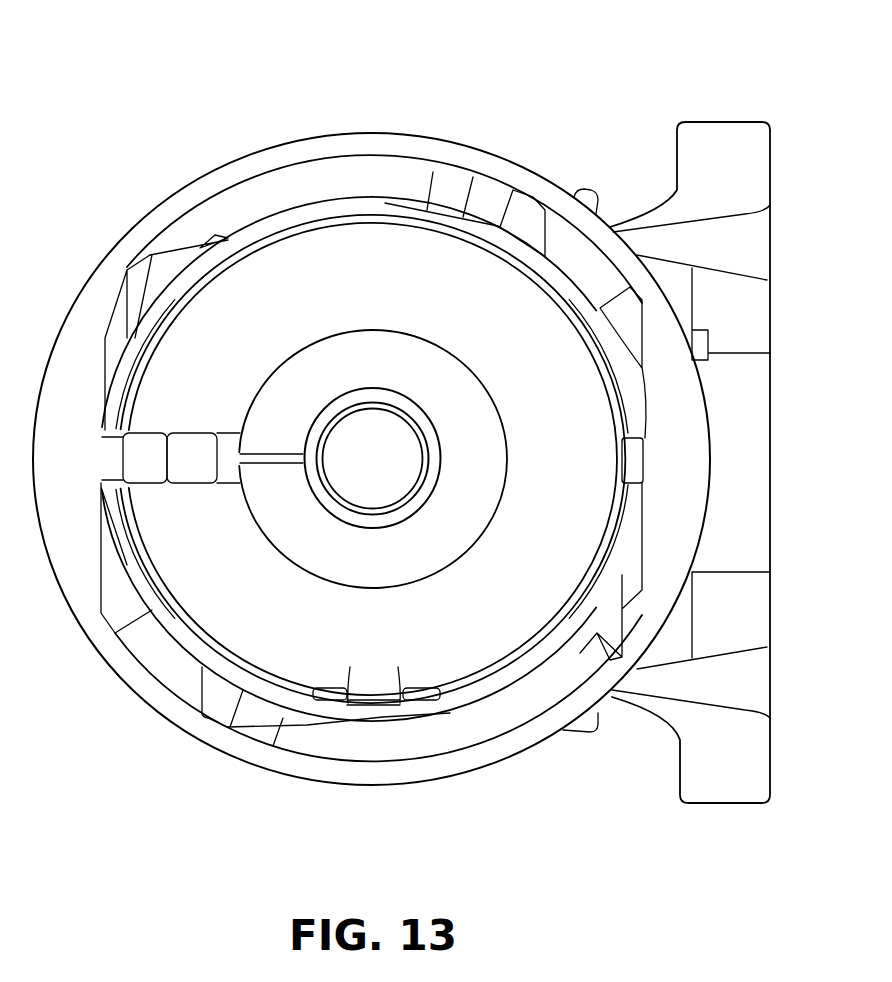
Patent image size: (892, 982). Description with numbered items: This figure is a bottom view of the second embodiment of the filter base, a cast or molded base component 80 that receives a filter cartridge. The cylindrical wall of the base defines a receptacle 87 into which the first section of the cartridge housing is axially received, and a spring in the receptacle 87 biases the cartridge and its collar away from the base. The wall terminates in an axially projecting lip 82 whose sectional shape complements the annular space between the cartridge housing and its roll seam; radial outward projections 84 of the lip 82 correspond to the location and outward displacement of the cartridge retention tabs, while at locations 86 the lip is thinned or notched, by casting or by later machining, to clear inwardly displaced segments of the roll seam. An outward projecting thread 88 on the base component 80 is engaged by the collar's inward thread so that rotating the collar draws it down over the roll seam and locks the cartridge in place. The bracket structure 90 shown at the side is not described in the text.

The base component 80 is at (465, 97).
The lip 82 is at (282, 220).
The radial outward projections 84 is at (165, 295).
The locations 86 is at (437, 207).
The receptacle 87 is at (483, 603).
The outward projecting thread 88 is at (440, 412).
The mounting bracket 90 is at (712, 140).